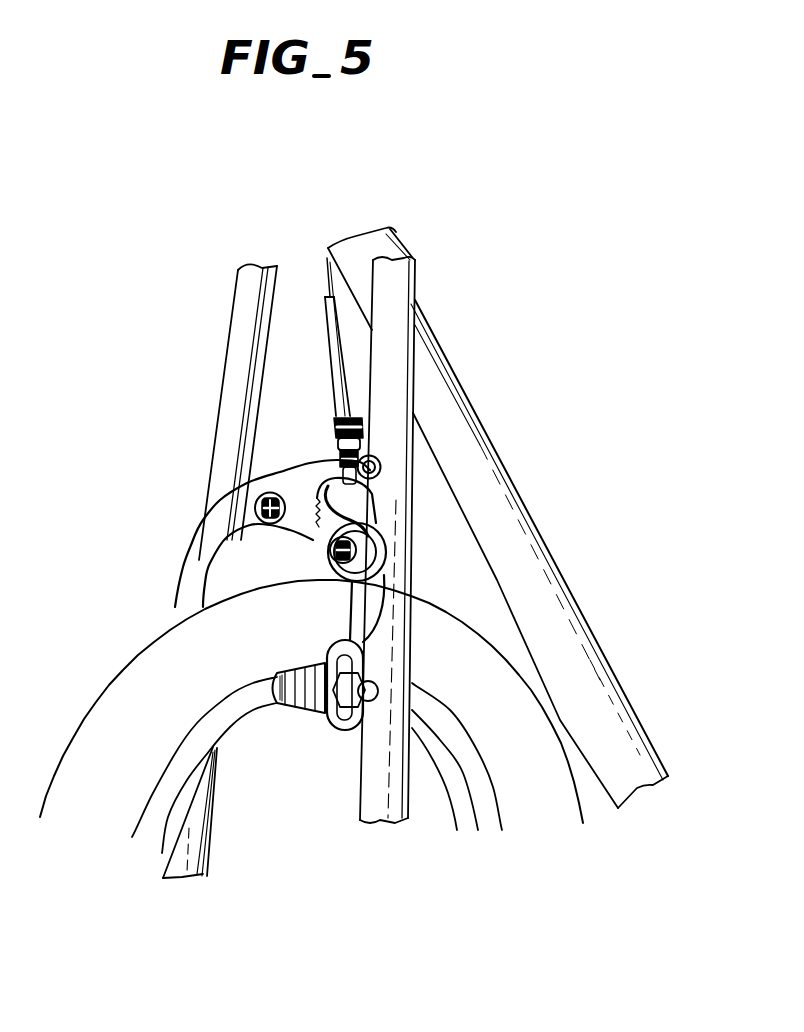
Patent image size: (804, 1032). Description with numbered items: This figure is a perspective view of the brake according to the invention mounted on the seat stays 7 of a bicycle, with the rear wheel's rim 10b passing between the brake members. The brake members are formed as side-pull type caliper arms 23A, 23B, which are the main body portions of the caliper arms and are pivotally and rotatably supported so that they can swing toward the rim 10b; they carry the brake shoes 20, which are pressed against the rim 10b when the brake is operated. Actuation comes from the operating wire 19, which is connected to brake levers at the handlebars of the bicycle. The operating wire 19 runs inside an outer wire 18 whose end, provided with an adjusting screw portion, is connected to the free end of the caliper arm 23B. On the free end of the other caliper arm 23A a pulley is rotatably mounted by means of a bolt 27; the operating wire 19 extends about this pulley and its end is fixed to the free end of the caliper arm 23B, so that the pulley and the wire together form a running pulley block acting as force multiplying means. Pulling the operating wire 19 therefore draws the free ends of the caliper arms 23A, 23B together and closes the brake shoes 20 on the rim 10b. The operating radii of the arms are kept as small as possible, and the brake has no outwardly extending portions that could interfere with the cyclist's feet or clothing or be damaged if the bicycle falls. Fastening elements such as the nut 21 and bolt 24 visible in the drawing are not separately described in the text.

The seat stays 7 is at (226, 363).
The rim 10b is at (180, 777).
The outer wire 18 is at (333, 352).
The operating wire 19 is at (327, 280).
The brake shoes 20 is at (283, 712).
The brake shoe fixing nut 21 is at (367, 727).
The caliper arm 23A is at (178, 572).
The caliper arm 23B is at (367, 607).
The arm mounting bolt 24 is at (255, 508).
The bolt 27 is at (331, 550).